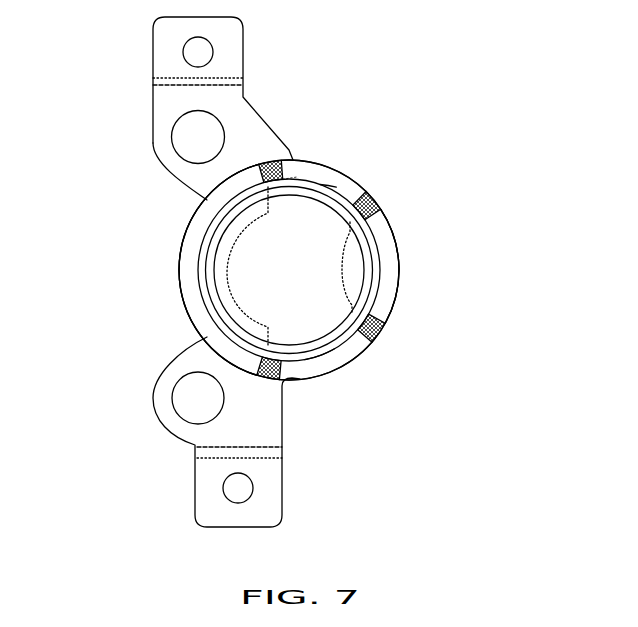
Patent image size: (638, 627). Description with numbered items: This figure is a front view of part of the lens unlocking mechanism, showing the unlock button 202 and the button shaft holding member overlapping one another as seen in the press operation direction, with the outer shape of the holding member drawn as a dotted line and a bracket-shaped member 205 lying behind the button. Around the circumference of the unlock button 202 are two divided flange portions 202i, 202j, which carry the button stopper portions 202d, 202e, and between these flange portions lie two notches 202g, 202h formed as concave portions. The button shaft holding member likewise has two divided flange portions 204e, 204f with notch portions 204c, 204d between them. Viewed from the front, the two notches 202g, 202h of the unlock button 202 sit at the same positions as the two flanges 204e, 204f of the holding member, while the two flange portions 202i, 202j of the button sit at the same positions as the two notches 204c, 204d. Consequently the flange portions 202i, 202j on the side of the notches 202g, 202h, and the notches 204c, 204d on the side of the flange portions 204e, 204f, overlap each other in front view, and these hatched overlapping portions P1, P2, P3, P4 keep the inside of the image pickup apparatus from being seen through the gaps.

The unlock button 202 is at (270, 280).
The mounting bracket 205 is at (170, 112).
The button stopper portion 202d is at (388, 262).
The flange portion 202i is at (478, 266).
The button stopper portion 202e is at (186, 270).
The flange portion 202j is at (172, 269).
The notch 202g is at (347, 184).
The notch 202h is at (345, 348).
The notch portion 204c is at (217, 247).
The notch portion 204d is at (355, 262).
The flange portion 204e is at (322, 177).
The flange portion 204f is at (320, 358).
The overlapping portion P1 is at (377, 206).
The overlapping portion P2 is at (273, 160).
The overlapping portion P3 is at (380, 327).
The overlapping portion P4 is at (268, 368).